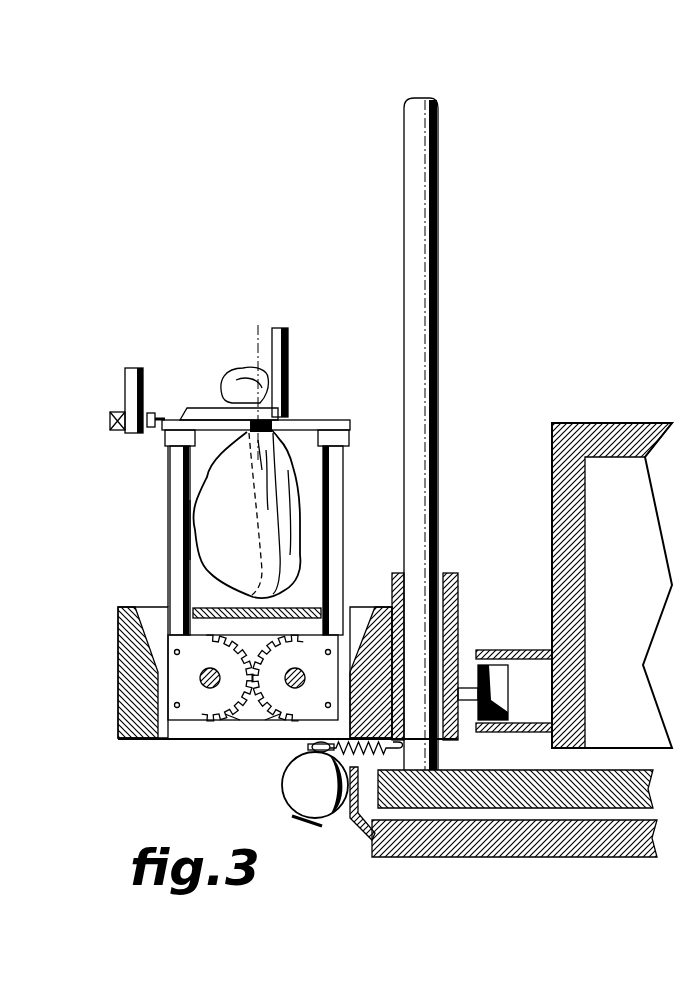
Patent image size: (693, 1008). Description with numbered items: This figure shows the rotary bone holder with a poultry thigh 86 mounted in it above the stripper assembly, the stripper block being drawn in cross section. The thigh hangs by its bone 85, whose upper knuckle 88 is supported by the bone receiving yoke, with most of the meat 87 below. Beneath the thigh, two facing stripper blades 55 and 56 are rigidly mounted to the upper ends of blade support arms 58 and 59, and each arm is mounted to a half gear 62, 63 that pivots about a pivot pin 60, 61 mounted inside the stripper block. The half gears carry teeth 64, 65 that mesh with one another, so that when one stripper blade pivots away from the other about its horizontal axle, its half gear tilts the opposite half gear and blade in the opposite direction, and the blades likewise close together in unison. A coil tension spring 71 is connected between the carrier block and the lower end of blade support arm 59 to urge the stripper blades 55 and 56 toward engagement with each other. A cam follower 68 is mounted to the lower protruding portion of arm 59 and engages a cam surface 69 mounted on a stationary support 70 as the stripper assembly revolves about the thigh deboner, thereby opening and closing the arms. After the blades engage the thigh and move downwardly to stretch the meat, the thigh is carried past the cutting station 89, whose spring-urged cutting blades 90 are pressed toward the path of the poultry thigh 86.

The stripper blade 55 is at (337, 424).
The stripper blade 56 is at (166, 446).
The blade support arm 58 is at (171, 494).
The blade support arm 59 is at (345, 531).
The pivot pin 60 is at (212, 655).
The pivot pin 61 is at (296, 670).
The half gear 62 is at (200, 718).
The half gear 63 is at (303, 727).
The teeth 64 is at (232, 722).
The teeth 65 is at (272, 722).
The cam follower 68 is at (287, 797).
The cam surface 69 is at (350, 820).
The stationary support 70 is at (460, 858).
The coil tension spring 71 is at (300, 752).
The bone 85 is at (246, 489).
The poultry thigh 86 is at (140, 538).
The meat 87 is at (205, 528).
The upper knuckle 88 is at (215, 392).
The cutting station 89 is at (117, 404).
The cutting blades 90 is at (155, 415).